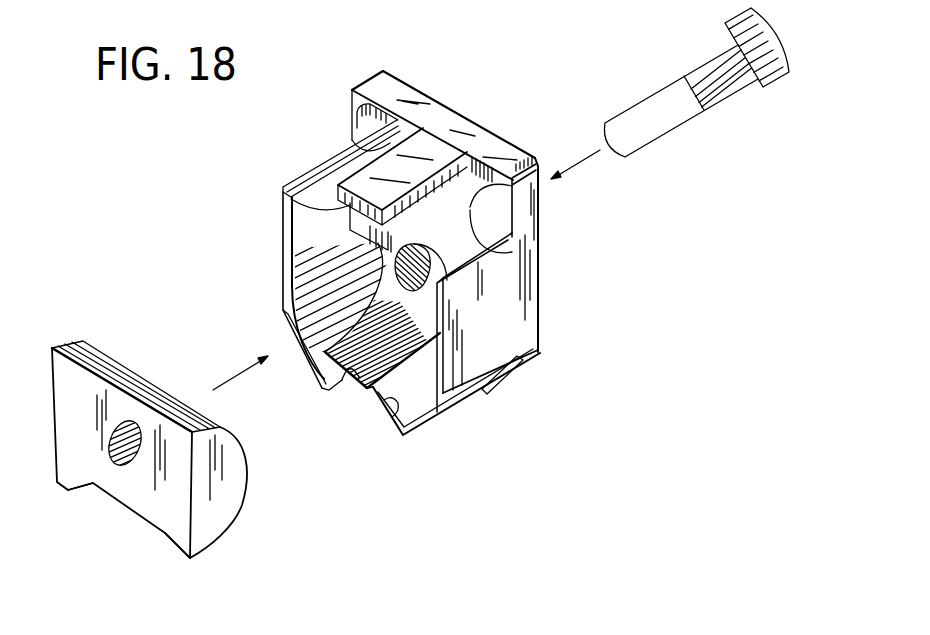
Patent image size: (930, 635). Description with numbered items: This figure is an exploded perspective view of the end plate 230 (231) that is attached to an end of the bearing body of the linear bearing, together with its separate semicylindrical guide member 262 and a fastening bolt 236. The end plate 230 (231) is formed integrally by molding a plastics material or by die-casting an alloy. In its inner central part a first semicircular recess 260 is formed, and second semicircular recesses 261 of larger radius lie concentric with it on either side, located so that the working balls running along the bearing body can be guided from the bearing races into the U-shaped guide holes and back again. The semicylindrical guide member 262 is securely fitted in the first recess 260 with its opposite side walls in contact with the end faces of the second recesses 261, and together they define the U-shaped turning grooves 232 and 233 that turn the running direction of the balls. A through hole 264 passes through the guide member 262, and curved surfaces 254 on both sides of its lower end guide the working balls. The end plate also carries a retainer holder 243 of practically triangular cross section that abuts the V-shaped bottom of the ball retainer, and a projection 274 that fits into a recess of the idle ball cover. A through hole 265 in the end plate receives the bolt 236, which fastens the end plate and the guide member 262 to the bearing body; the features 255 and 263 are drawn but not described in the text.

The end plate 230 is at (452, 127).
The end plate 231 is at (443, 114).
The U-shaped turning groove 232 is at (352, 148).
The U-shaped turning groove 233 is at (465, 215).
The bolt 236 is at (703, 72).
The retainer holder 243 is at (348, 376).
The curved surface 254 is at (60, 490).
The slot recess 255 is at (324, 386).
The first semicircular recess 260 is at (410, 318).
The second semicircular recess 261 is at (305, 248).
The semicylindrical guide member 262 is at (134, 374).
The rounded plate end 263 is at (222, 492).
The through hole 264 is at (137, 466).
The through hole 265 is at (422, 307).
The projection 274 is at (336, 194).